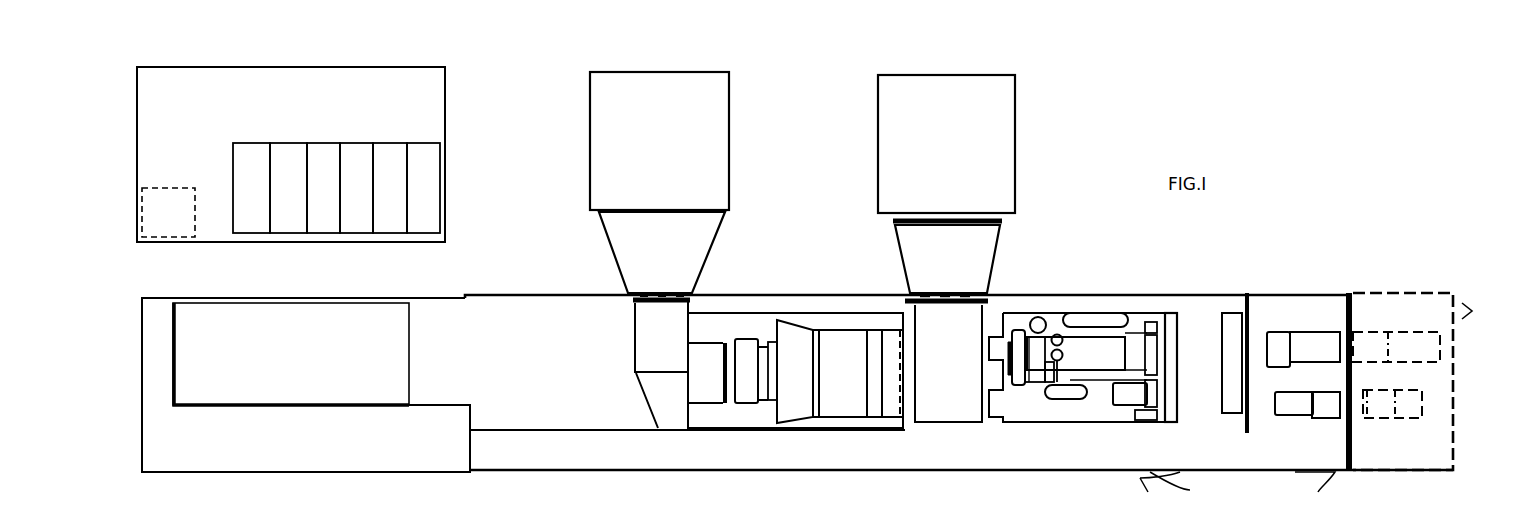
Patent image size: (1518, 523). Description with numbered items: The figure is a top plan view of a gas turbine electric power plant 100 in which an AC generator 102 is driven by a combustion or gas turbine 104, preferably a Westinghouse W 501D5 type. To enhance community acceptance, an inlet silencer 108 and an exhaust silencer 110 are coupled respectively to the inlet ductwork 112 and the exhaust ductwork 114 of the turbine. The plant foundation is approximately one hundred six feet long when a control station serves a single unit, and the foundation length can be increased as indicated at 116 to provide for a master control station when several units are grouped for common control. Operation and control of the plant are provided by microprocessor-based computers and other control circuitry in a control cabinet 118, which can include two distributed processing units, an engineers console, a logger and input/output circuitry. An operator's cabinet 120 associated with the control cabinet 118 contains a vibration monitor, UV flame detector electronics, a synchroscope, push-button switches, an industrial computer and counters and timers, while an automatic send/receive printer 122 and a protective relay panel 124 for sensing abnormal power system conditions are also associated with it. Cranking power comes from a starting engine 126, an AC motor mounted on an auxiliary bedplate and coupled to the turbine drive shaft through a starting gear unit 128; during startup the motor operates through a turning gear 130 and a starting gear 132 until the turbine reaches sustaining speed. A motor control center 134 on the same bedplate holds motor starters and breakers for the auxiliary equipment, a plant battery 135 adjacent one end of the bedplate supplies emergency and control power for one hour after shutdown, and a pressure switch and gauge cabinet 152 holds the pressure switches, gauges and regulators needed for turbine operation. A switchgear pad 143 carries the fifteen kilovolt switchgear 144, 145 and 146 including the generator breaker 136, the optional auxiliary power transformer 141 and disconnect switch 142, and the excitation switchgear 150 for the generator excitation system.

The gas turbine electric power plant 100 is at (962, 499).
The AC generator 102 is at (330, 392).
The gas turbine 104 is at (837, 328).
The inlet silencer 108 is at (700, 72).
The exhaust silencer 110 is at (993, 75).
The inlet ductwork 112 is at (715, 240).
The exhaust ductwork 114 is at (1002, 240).
The foundation length increase 116 is at (1413, 293).
The control cabinet 118 is at (1317, 332).
The operator's cabinet 120 is at (1327, 415).
The automatic send/receive printer 122 is at (1290, 415).
The protective relay panel 124 is at (1278, 338).
The starting engine 126 is at (1088, 340).
The starting gear unit 128 is at (1028, 310).
The turning gear 130 is at (1037, 397).
The starting gear 132 is at (1030, 392).
The motor control center 134 is at (1105, 422).
The plant battery 135 is at (1193, 292).
The generator breaker 136 is at (277, 143).
The auxiliary power transformer 141 is at (237, 143).
The disconnect switch 142 is at (158, 187).
The switchgear pad 143 is at (357, 67).
The 15 KV switchgear 144 is at (317, 143).
The 15 KV switchgear 145 is at (357, 143).
The 15 KV switchgear 146 is at (393, 143).
The excitation switchgear 150 is at (427, 143).
The pressure switch and gauge cabinet 152 is at (1170, 412).